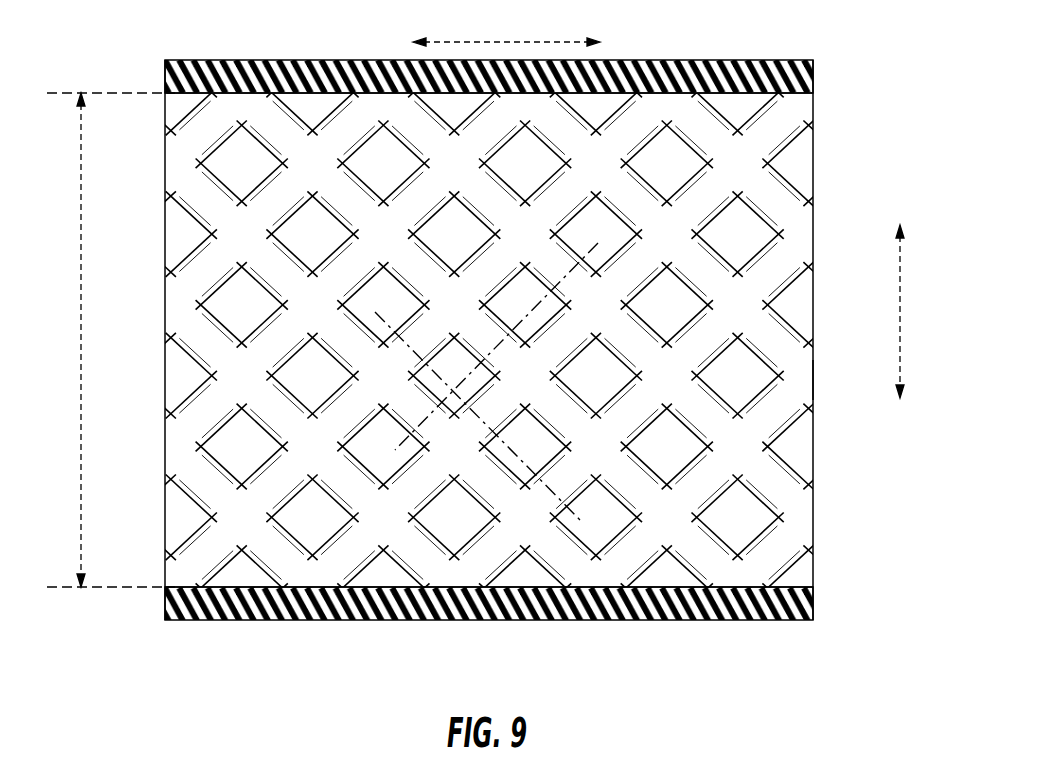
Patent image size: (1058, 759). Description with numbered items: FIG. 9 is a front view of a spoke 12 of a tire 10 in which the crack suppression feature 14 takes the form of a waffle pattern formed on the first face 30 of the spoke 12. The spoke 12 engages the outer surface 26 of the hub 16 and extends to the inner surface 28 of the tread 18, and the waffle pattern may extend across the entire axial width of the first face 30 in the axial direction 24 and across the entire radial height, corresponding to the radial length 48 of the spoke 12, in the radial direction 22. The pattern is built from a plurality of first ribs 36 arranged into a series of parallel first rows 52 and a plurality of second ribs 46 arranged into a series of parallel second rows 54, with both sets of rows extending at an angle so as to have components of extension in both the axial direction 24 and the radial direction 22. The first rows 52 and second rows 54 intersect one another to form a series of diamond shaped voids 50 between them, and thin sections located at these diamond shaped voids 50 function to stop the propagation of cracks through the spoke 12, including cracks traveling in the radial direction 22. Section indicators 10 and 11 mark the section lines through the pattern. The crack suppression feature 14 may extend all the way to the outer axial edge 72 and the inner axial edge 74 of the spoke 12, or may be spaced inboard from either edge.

The tire 10 is at (598, 243).
The section view indicator 11- 11 is at (375, 312).
The spoke 12 is at (813, 233).
The crack suppression feature 14 is at (737, 304).
The hub 16 is at (787, 72).
The tread 18 is at (777, 615).
The radial direction 22 is at (900, 310).
The axial direction 24 is at (507, 42).
The outer surface 26 is at (800, 97).
The inner surface 28 is at (792, 579).
The first face 30 is at (804, 443).
The first ribs 36 is at (593, 160).
The second ribs 46 is at (277, 133).
The radial length 48 is at (80, 202).
The diamond shaped voids 50 is at (238, 447).
The first rows 52 is at (208, 557).
The second rows 54 is at (274, 560).
The outer axial edge 72 is at (165, 432).
The inner axial edge 74 is at (813, 382).